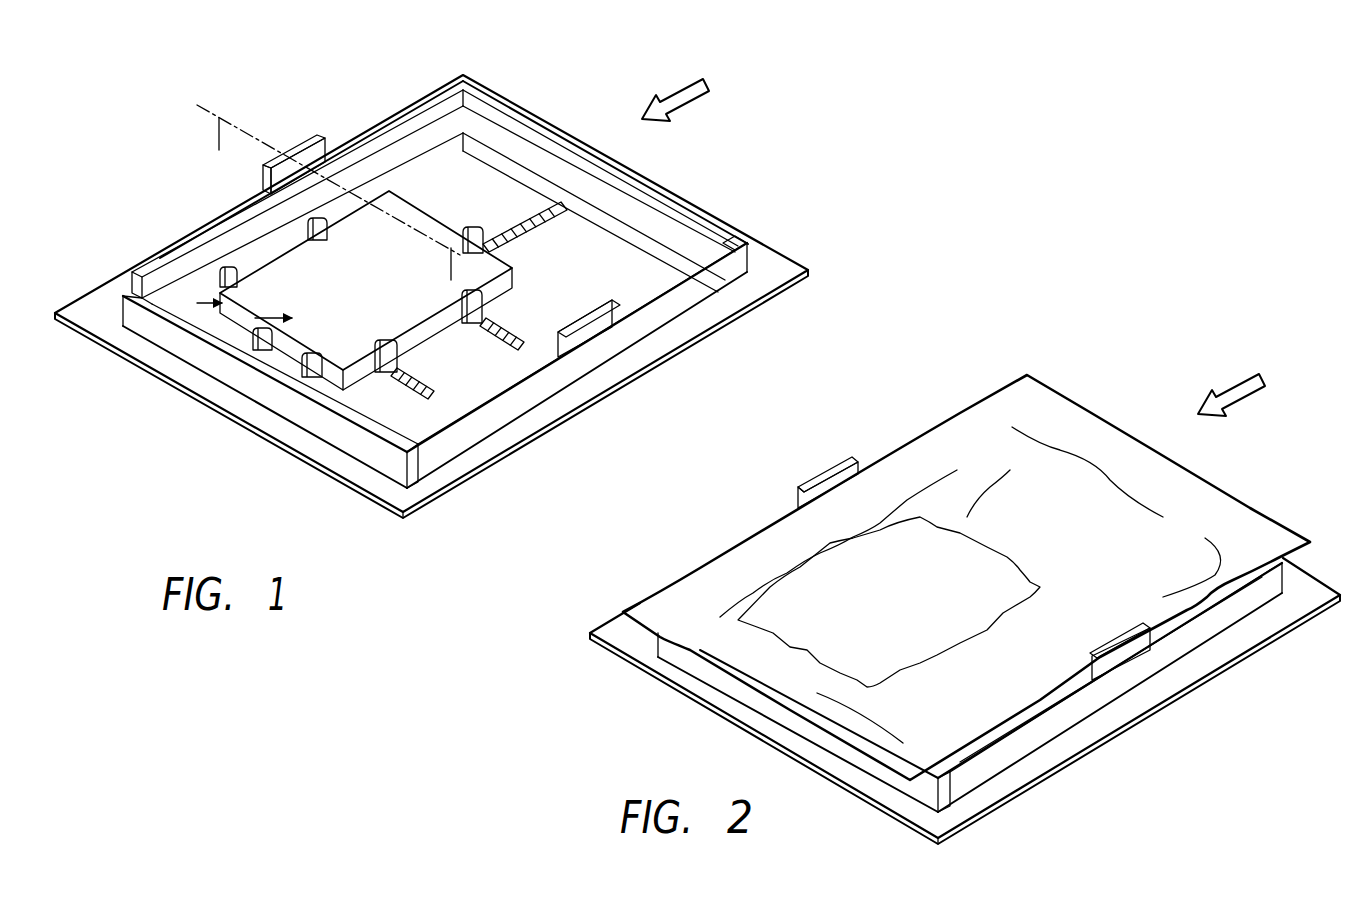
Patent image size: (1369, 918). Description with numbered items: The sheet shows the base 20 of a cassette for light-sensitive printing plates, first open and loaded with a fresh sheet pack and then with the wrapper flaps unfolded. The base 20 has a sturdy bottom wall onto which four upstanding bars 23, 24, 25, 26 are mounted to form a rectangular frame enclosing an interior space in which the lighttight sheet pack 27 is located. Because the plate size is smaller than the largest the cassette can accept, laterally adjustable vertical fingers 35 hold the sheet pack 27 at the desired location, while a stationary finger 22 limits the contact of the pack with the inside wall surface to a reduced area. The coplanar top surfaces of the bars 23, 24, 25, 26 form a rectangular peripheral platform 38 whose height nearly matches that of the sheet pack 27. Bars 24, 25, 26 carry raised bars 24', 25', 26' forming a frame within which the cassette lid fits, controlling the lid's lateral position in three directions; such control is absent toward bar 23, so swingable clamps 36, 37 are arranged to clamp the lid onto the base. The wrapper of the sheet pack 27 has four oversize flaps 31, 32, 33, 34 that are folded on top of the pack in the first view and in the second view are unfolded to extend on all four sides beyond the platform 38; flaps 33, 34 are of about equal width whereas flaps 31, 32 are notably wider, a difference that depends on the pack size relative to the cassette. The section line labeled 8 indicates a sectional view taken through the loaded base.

In FIG. 1, the section line 8 is at (213, 125).
In FIG. 1, the base 20 is at (712, 90).
In FIG. 2, the base 20 is at (1272, 383).
In FIG. 1, the stationary finger 22 is at (255, 318).
In FIG. 1, the upstanding bar 23 is at (256, 388).
In FIG. 1, the upstanding bar 24 is at (297, 194).
In FIG. 1, the raised bar 24' is at (320, 140).
In FIG. 1, the upstanding bar 25 is at (600, 156).
In FIG. 1, the raised bar 25' is at (632, 162).
In FIG. 1, the upstanding bar 26 is at (600, 365).
In FIG. 1, the raised bar 26' is at (335, 401).
In FIG. 2, the raised bar 26' is at (1022, 722).
In FIG. 1, the sheet pack 27 is at (197, 303).
In FIG. 2, the sheet pack 27 is at (908, 583).
In FIG. 1, the flap 31 is at (352, 232).
In FIG. 2, the flap 31 is at (1245, 520).
In FIG. 1, the flap 32 is at (340, 352).
In FIG. 2, the flap 32 is at (1047, 673).
In FIG. 2, the flap 33 is at (757, 668).
In FIG. 1, the flap 34 is at (122, 302).
In FIG. 2, the flap 34 is at (705, 582).
In FIG. 1, the laterally adjustable vertical fingers 35 is at (472, 255).
In FIG. 1, the clamp 36 is at (298, 152).
In FIG. 2, the clamp 36 is at (798, 482).
In FIG. 1, the clamp 37 is at (600, 328).
In FIG. 2, the clamp 37 is at (1127, 662).
In FIG. 1, the peripheral platform 38 is at (686, 236).